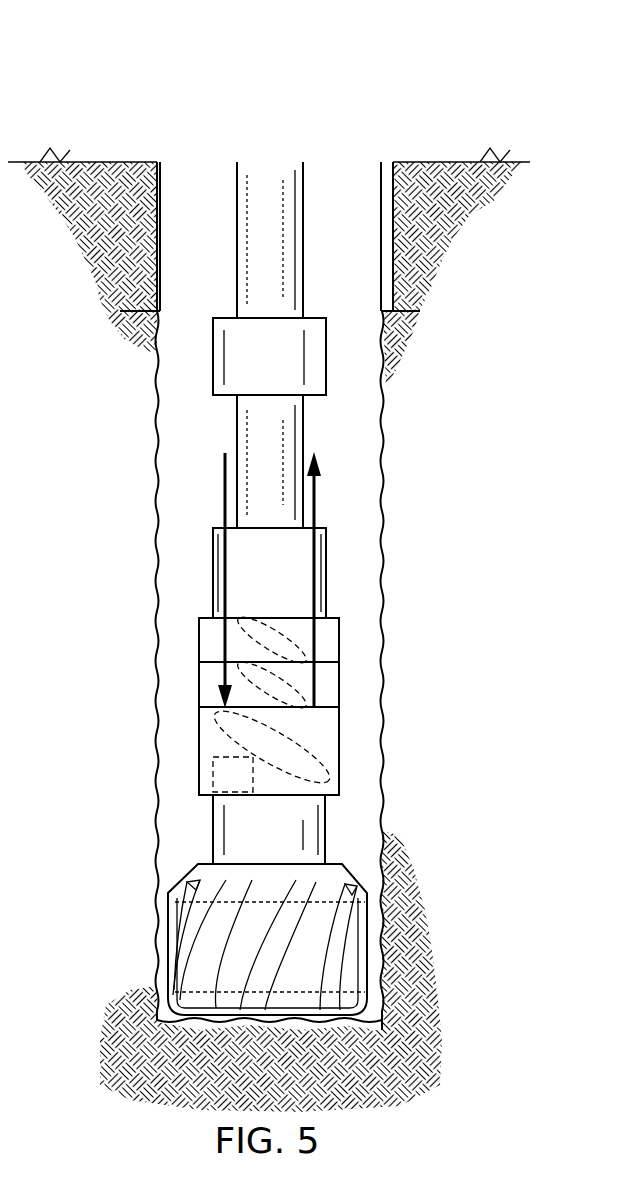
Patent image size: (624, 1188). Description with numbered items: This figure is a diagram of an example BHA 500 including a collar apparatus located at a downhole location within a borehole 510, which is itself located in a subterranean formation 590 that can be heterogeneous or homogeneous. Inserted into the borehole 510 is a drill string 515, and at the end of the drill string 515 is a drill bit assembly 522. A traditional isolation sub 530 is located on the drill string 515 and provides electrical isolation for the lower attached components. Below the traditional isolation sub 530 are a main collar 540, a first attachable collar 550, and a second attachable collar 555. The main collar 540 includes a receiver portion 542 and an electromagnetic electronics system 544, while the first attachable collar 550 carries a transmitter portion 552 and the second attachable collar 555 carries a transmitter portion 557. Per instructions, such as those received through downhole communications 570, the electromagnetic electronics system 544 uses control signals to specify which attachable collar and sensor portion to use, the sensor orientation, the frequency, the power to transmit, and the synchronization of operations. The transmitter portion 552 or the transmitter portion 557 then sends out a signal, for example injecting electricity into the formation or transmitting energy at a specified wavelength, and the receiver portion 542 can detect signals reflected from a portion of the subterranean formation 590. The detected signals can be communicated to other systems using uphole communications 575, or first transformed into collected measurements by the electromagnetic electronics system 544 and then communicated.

The BHA 500 is at (134, 95).
The subterranean formation 590 is at (503, 266).
The borehole 510 is at (158, 372).
The drill string 515 is at (303, 242).
The traditional isolation sub 530 is at (292, 590).
The downhole communications 570 is at (222, 497).
The uphole communications 575 is at (318, 497).
The second attachable collar 555 is at (208, 640).
The transmitter portion 557 is at (280, 628).
The first attachable collar 550 is at (208, 685).
The transmitter portion 552 is at (280, 672).
The main collar 540 is at (208, 745).
The receiver portion 542 is at (280, 732).
The electromagnetic electronics system 544 is at (208, 773).
The drill bit assembly 522 is at (168, 946).